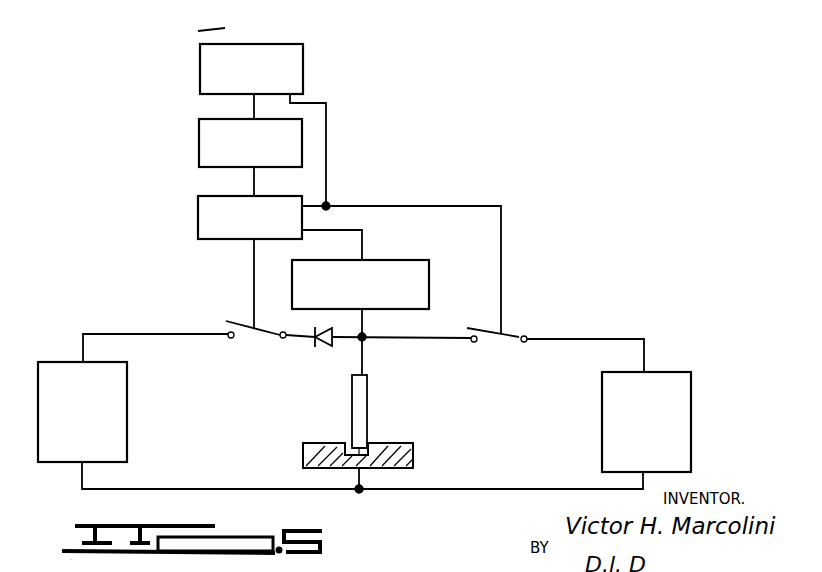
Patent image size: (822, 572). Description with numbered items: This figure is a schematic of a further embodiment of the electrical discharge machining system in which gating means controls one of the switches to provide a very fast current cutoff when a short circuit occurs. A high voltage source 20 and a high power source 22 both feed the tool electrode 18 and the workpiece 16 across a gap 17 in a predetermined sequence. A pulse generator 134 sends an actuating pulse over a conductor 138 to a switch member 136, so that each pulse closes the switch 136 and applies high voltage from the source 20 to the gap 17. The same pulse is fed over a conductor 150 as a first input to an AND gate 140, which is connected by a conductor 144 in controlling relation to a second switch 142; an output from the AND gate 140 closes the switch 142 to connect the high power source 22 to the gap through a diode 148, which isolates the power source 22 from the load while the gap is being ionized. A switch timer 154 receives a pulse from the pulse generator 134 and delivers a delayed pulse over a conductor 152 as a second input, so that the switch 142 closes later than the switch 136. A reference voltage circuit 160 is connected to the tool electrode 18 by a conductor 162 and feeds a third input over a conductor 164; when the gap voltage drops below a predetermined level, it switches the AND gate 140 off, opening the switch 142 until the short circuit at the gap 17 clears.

The pulse generator 134 is at (296, 63).
The switch timer 154 is at (206, 131).
The conductor 152 is at (254, 183).
The AND gate 140 is at (198, 220).
The conductor 144 is at (254, 260).
The conductor 150 is at (326, 204).
The conductor 138 is at (458, 207).
The conductor 164 is at (338, 230).
The reference voltage circuit 160 is at (424, 283).
The conductor 162 is at (363, 325).
The high power source 22 is at (53, 368).
The second switch 142 is at (227, 322).
The diode 148 is at (315, 348).
The switch member 136 is at (512, 330).
The high voltage source 20 is at (670, 380).
The tool electrode 18 is at (367, 390).
The gap 17 is at (365, 445).
The workpiece 16 is at (405, 446).